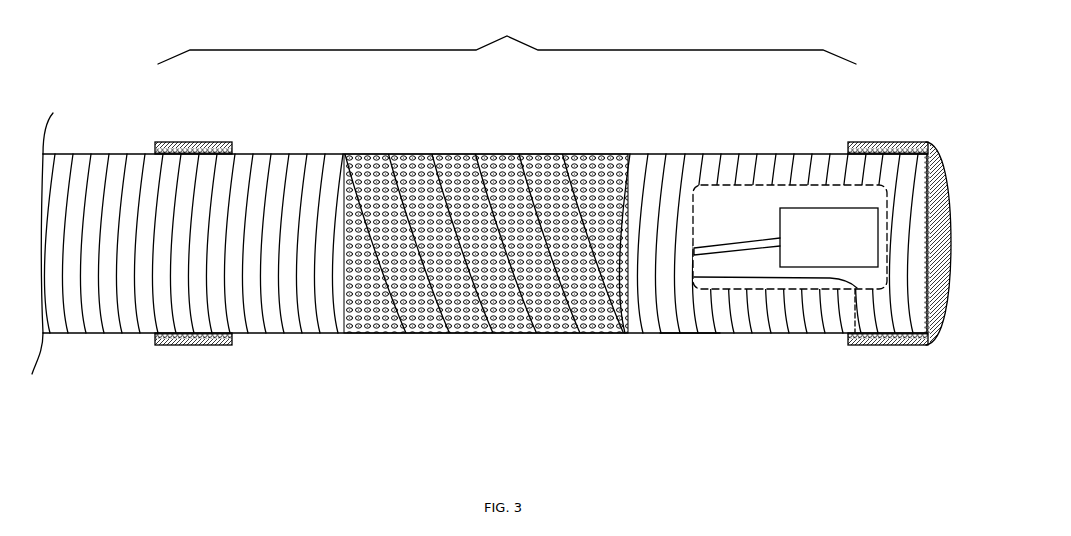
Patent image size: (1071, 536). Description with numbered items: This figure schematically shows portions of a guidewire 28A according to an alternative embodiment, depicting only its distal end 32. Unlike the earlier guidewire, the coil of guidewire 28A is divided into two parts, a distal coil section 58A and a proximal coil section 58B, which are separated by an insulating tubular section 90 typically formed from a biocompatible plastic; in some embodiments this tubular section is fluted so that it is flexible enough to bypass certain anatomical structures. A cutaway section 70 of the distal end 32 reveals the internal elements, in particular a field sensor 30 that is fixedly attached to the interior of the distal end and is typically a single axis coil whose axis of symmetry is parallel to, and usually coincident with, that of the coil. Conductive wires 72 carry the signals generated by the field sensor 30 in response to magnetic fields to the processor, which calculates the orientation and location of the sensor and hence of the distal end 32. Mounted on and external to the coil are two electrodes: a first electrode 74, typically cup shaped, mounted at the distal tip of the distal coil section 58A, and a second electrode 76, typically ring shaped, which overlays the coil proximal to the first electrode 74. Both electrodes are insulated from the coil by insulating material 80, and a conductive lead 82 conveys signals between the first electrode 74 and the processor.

The distal end 32 is at (507, 39).
The guidewire 28A is at (295, 154).
The field sensor 30 is at (813, 208).
The first electrode 74 is at (903, 142).
The second electrode 76 is at (212, 142).
The insulating material 80 is at (155, 153).
The proximal coil section 58B is at (58, 334).
The distal coil section 58A is at (692, 334).
The insulating tubular section 90 is at (447, 334).
The cutaway section 70 is at (810, 291).
The conductive wires 72 is at (709, 249).
The conductive lead 82 is at (742, 278).